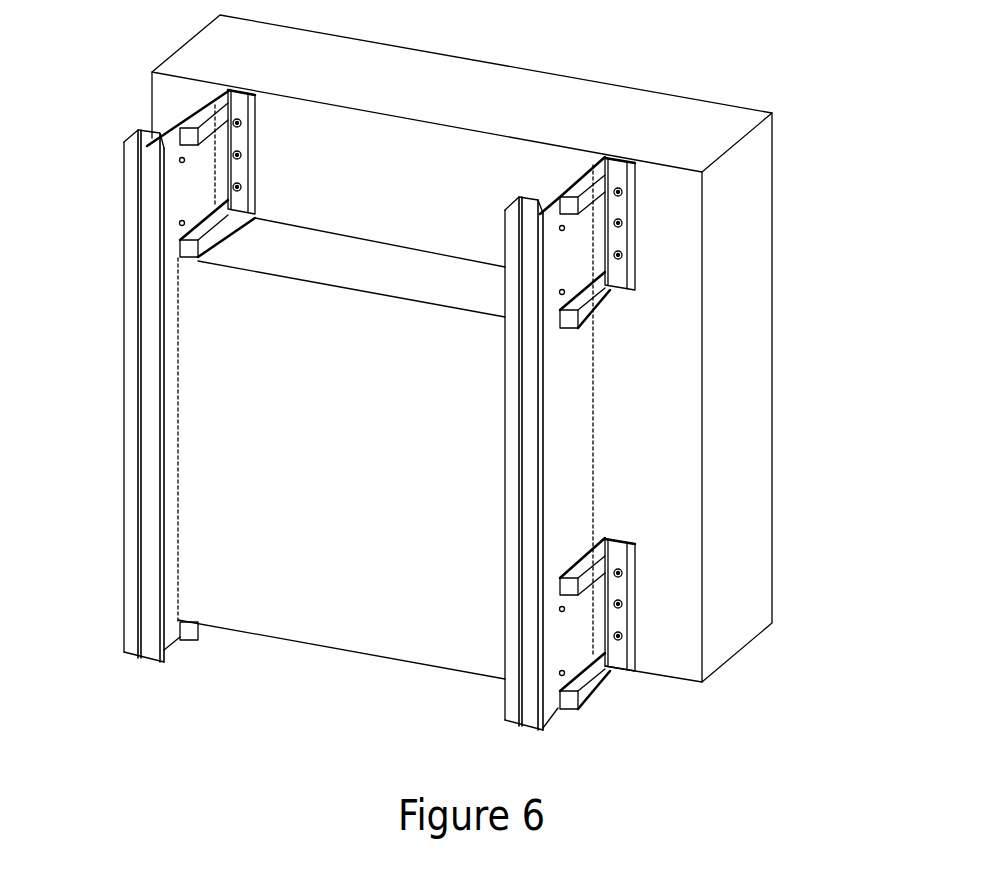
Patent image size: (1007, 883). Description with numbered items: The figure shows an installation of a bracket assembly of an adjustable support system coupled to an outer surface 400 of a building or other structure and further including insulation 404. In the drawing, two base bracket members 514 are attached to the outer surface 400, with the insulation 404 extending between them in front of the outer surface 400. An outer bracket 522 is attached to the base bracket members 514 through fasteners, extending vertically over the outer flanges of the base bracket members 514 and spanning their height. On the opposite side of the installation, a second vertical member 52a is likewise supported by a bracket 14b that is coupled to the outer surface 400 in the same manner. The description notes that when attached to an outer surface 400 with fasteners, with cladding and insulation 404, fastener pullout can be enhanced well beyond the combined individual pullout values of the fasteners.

The outer surface 400 is at (487, 87).
The insulation 404 is at (367, 628).
The channel / stud 52a is at (132, 392).
The outer bracket 522 is at (547, 388).
The bracket 14b is at (242, 138).
The base bracket member 514 is at (620, 208).